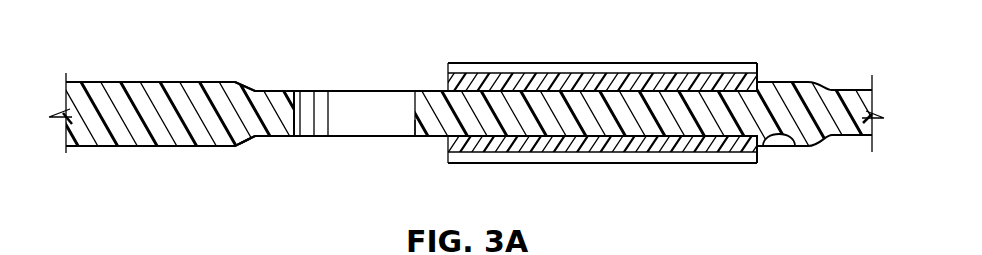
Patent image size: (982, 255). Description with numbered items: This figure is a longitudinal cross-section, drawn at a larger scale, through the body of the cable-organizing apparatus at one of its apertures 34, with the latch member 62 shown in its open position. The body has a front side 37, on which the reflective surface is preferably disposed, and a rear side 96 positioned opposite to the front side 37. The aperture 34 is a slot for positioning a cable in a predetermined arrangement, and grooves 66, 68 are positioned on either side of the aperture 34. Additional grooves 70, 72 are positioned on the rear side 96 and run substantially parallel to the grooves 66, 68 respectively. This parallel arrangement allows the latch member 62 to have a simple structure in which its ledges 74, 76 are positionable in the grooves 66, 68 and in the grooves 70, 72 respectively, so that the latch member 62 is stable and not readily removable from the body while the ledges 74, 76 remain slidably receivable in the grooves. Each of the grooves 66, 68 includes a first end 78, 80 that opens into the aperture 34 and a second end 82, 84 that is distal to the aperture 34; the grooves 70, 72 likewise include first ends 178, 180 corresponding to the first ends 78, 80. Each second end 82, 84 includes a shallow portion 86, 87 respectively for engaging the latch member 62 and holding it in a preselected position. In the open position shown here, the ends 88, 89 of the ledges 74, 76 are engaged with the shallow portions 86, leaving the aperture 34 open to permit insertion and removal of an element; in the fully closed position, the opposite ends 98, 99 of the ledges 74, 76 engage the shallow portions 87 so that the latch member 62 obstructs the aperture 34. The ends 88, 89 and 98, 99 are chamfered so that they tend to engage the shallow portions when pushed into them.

The rear side 96 is at (167, 82).
The front side 37 is at (158, 146).
The second end 84 is at (237, 146).
The shallow portion 87 is at (246, 143).
The groove 68 is at (256, 137).
The additional groove 72 is at (272, 91).
The first end 80 is at (294, 137).
The first end 180 is at (298, 91).
The aperture 34 is at (336, 129).
The first end 178 is at (415, 91).
The first end 78 is at (415, 137).
The additional groove 70 is at (440, 91).
The groove 66 is at (431, 137).
The end 99 is at (461, 63).
The ledge 76 is at (713, 80).
The end 89 is at (753, 88).
The ledge 74 is at (666, 146).
The latch member 62 is at (718, 162).
The end 98 is at (447, 153).
The end 88 is at (757, 153).
The second end 82 is at (768, 147).
The shallow portion 86 is at (796, 146).